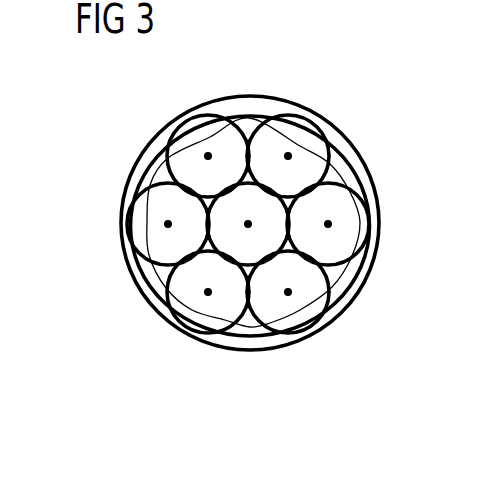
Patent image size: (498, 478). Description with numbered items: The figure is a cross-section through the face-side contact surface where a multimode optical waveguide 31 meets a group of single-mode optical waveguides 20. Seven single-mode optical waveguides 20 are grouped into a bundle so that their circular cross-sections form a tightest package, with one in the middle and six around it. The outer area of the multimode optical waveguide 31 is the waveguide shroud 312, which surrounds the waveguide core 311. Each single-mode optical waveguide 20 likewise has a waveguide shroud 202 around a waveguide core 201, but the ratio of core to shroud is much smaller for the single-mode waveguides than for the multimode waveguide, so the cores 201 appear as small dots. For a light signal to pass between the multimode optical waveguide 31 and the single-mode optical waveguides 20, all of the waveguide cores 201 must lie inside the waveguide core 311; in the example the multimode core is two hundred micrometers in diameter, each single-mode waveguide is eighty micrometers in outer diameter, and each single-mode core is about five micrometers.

The single-mode optical waveguide 20 is at (213, 224).
The waveguide core 201 is at (166, 224).
The waveguide shroud 202 is at (192, 132).
The multimode optical waveguide 31 is at (345, 313).
The waveguide core 311 is at (247, 315).
The waveguide shroud 312 is at (248, 113).